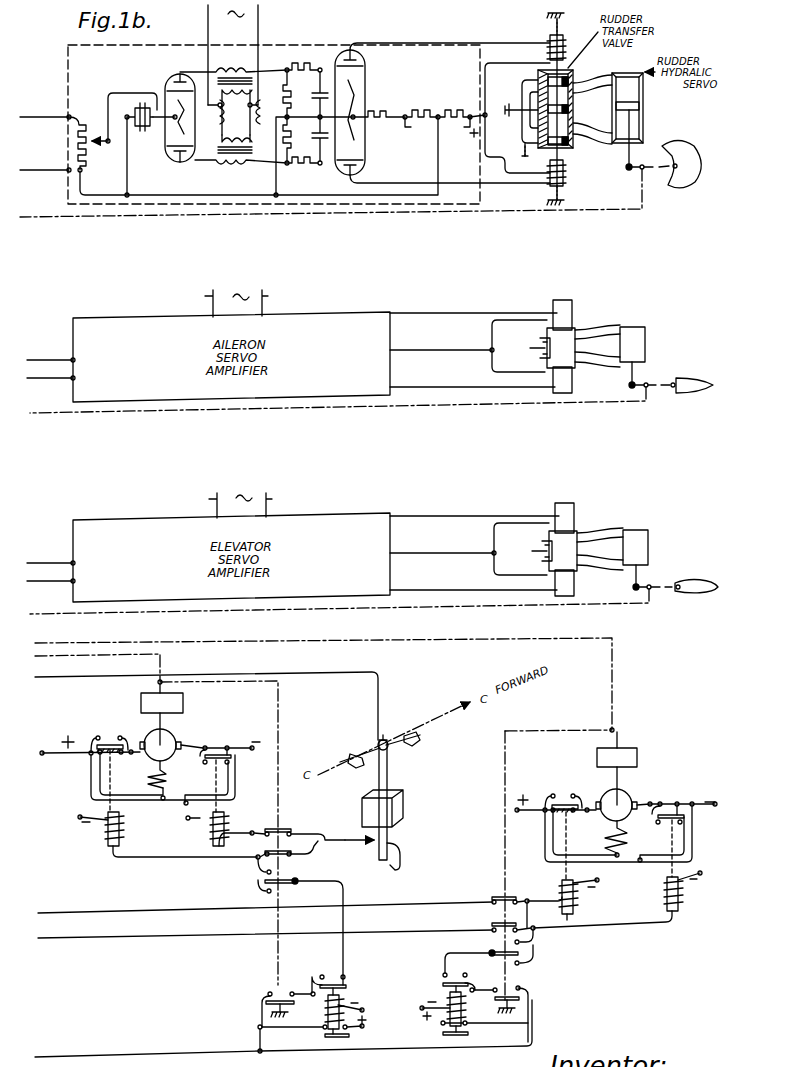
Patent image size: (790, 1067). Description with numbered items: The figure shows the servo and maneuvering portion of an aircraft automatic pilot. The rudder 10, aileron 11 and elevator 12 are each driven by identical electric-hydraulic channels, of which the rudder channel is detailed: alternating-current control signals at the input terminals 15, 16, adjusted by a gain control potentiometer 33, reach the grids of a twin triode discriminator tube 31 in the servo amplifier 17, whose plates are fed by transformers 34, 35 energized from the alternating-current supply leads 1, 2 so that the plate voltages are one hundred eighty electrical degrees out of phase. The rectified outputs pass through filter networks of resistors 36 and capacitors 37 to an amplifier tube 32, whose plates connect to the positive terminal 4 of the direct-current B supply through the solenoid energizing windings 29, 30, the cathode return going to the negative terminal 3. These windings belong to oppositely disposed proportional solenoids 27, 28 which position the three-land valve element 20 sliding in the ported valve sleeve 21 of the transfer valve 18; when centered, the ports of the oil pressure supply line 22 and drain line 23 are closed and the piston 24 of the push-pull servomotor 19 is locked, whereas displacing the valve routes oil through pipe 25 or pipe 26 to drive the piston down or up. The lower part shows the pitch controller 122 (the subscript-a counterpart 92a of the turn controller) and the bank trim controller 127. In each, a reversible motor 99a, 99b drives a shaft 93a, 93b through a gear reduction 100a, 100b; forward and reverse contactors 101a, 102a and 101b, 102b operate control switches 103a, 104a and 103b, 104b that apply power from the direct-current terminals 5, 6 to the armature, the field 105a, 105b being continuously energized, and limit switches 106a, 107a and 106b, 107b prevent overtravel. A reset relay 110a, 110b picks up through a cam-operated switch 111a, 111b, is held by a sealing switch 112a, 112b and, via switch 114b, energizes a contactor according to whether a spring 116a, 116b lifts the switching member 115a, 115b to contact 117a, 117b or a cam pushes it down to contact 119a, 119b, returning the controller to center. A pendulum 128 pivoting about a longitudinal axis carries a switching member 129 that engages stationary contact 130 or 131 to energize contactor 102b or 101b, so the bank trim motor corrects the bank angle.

The A.-C. supply lead 1 is at (207, 13).
The A.-C. supply lead 2 is at (258, 13).
The negative terminal of D.-C. B power supply 3 is at (403, 137).
The positive terminal of D.-C. B power supply 4 is at (463, 131).
The positive terminal of D.-C. supply 5 is at (45, 756).
The negative terminal of D.-C. supply 6 is at (78, 817).
The rudder control surface 10 is at (700, 180).
The aileron control surface 11 is at (708, 392).
The elevator control surface 12 is at (708, 592).
The input terminal 15 is at (66, 114).
The input terminal 16 is at (67, 172).
The servo amplifier 17 is at (290, 43).
The solenoid-operated transfer valve 18 is at (572, 72).
The hydraulic servomotor 19 is at (645, 123).
The three-land valve element 20 is at (568, 111).
The valve sleeve 21 is at (568, 150).
The oil pressure supply line 22 is at (512, 106).
The oil drain line 23 is at (522, 151).
The piston 24 is at (640, 106).
The pipe 25 is at (606, 72).
The pipe 26 is at (608, 142).
The solenoid 27 is at (562, 38).
The solenoid 28 is at (550, 186).
The solenoid energizing winding 29 is at (548, 50).
The solenoid energizing winding 30 is at (548, 170).
The twin triode discriminator electron tube 31 is at (168, 155).
The twin triode amplifier electron tube 32 is at (364, 63).
The gain control potentiometer 33 is at (86, 155).
The transformer 34 is at (225, 67).
The transformer 35 is at (218, 156).
The resistor 36 is at (300, 66).
The capacitor 37 is at (302, 168).
The pitch controller 92a is at (616, 815).
The shaft of the pitch controller 93a is at (67, 642).
The shaft of the bank trim controller 93b is at (65, 655).
The reversible motor 99a is at (627, 795).
The reversible motor 99b is at (170, 739).
The gear reduction 100a is at (597, 753).
The gear reduction 100b is at (183, 700).
The forward contactor 101a is at (573, 905).
The contactor 101b is at (108, 842).
The reverse contactor 102a is at (678, 899).
The contactor 102b is at (213, 846).
The control switch 103a is at (568, 810).
The control switch 103b is at (112, 752).
The control switch 104a is at (672, 810).
The control switch 104b is at (218, 748).
The motor field 105a is at (605, 840).
The motor field 105b is at (148, 782).
The limit switch 106a is at (494, 895).
The limit switch 106b is at (284, 830).
The limit switch 107a is at (496, 921).
The limit switch 107b is at (289, 856).
The reset relay 110a is at (452, 998).
The reset relay 110b is at (340, 1000).
The switch 111a is at (497, 992).
The switch 111b is at (272, 986).
The sealing switch 112a is at (466, 1034).
The sealing switch 112b is at (325, 1036).
The switch 114b is at (333, 982).
The switching member 115a is at (490, 950).
The switching member 115b is at (285, 884).
The spring 116a is at (503, 1010).
The spring 116b is at (289, 1013).
The contact 117a is at (520, 944).
The contact 117b is at (260, 874).
The contact 119a is at (522, 964).
The contact 119b is at (264, 893).
The pitch controller 122 is at (673, 768).
The bank trim controller 127 is at (147, 759).
The pendulum 128 is at (398, 796).
The switching member 129 is at (380, 852).
The stationary contact 130 is at (398, 862).
The stationary contact 131 is at (368, 845).